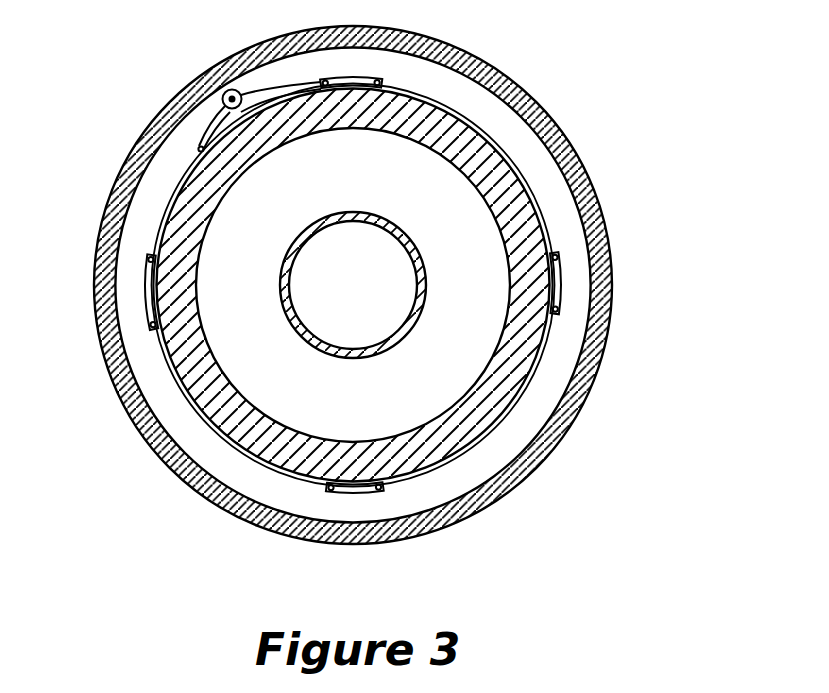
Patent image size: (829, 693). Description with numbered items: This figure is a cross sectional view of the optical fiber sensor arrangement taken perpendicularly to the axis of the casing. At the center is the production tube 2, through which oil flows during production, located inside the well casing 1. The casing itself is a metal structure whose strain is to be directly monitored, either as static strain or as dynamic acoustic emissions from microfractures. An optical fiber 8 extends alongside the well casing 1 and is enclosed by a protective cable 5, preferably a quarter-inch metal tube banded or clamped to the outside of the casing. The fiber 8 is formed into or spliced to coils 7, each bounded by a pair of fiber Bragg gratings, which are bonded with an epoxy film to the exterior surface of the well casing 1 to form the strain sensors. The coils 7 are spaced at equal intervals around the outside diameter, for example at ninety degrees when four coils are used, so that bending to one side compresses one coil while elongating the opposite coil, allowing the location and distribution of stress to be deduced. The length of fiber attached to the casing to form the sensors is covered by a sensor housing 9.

The well casing 1 is at (435, 125).
The production tube 2 is at (422, 318).
The protective cable 5 is at (223, 102).
The coils 7 is at (354, 80).
The optical fiber 8 is at (548, 206).
The sensor housing 9 is at (572, 145).